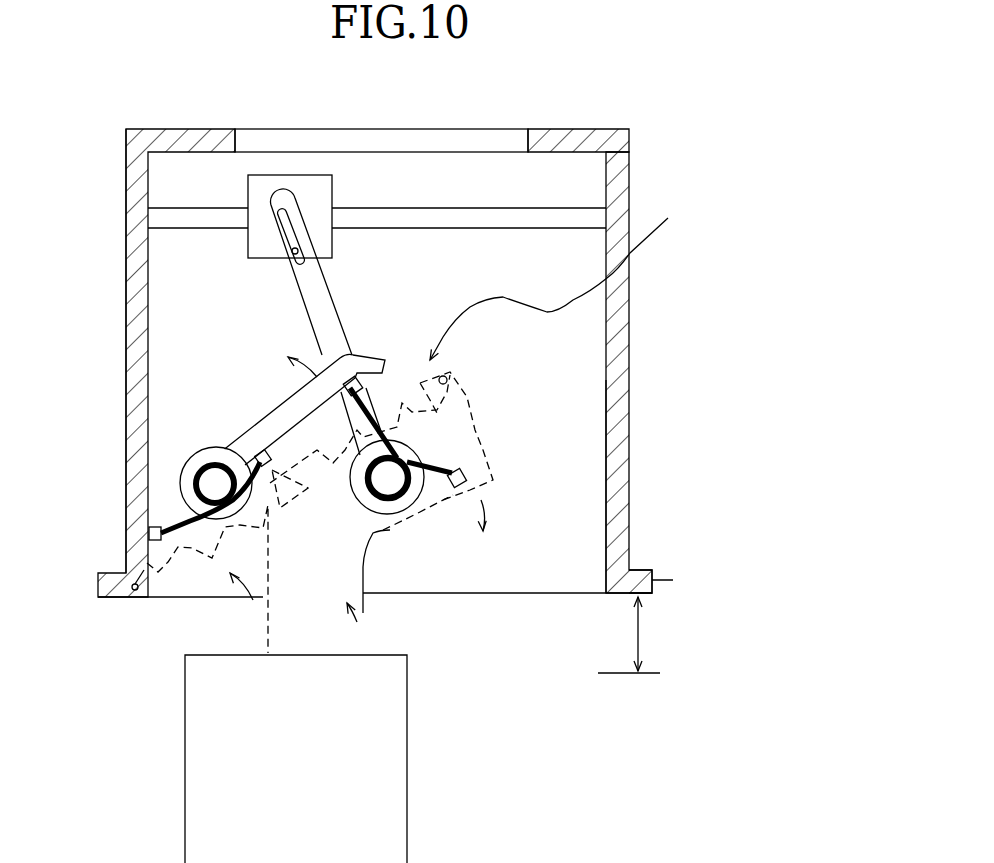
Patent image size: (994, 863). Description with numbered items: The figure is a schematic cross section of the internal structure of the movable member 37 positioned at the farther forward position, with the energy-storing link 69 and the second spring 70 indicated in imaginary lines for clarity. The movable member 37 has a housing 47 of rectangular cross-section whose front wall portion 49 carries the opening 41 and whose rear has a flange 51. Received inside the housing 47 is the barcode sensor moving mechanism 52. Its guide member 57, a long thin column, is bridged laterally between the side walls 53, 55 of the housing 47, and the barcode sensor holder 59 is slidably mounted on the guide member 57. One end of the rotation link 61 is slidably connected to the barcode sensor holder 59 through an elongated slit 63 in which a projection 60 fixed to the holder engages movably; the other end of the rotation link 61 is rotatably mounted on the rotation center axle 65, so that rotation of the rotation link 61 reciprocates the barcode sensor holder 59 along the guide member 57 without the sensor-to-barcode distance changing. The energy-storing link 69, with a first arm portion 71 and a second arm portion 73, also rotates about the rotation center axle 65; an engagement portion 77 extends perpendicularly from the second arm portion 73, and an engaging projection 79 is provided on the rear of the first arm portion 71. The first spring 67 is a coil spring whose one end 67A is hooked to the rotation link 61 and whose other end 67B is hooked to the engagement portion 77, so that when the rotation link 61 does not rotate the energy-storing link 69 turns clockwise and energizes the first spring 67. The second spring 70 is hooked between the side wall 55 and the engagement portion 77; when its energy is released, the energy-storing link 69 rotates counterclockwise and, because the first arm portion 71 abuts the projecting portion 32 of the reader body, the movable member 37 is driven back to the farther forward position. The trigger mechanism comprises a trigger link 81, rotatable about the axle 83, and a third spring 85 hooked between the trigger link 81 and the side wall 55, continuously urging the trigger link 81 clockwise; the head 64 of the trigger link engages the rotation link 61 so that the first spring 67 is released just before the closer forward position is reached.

The projecting portion 32 is at (403, 737).
The movable member 37 is at (632, 350).
The opening 41 is at (488, 135).
The housing 47 is at (623, 297).
The wall portion 49 is at (582, 142).
The flange 51 is at (643, 565).
The barcode sensor moving mechanism 52 is at (564, 281).
The side wall 53 is at (620, 413).
The side wall 55 is at (128, 480).
The guide member 57 is at (570, 215).
The barcode sensor holder 59 is at (292, 185).
The projection 60 is at (295, 272).
The rotation link 61 is at (333, 325).
The elongated slit 63 is at (292, 231).
The engagement head 64 is at (358, 350).
The rotation center axle 65 is at (390, 486).
The first spring 67 is at (443, 516).
The one end of the first spring 67A is at (365, 391).
The second spring end 67B is at (462, 470).
The energy-storing link 69 is at (363, 613).
The second spring 70 is at (190, 550).
The first arm portion 71 is at (318, 612).
The second arm portion 73 is at (440, 503).
The engagement portion 77 is at (470, 392).
The engaging projection 79 is at (243, 393).
The trigger link 81 is at (293, 407).
The axle 83 is at (217, 482).
The third spring 85 is at (197, 470).